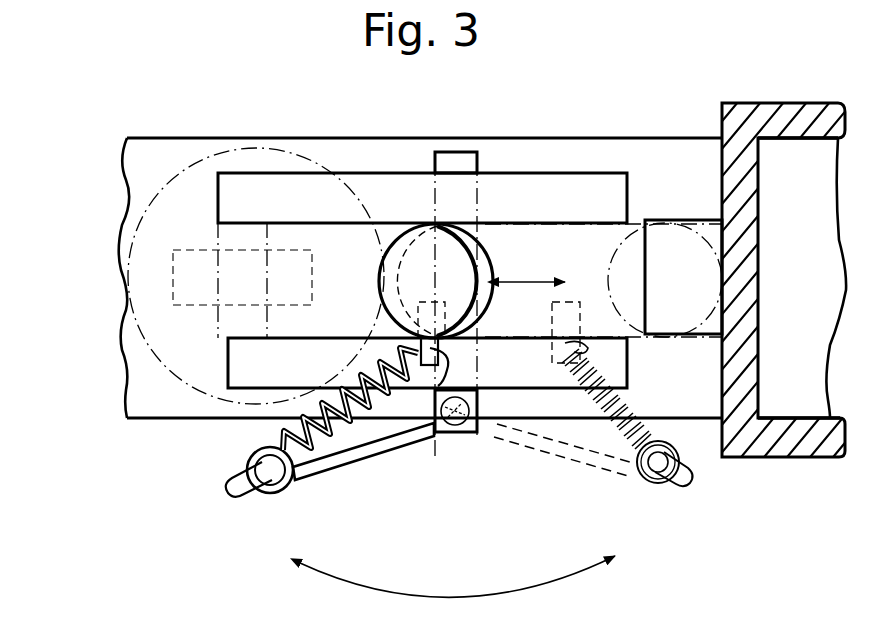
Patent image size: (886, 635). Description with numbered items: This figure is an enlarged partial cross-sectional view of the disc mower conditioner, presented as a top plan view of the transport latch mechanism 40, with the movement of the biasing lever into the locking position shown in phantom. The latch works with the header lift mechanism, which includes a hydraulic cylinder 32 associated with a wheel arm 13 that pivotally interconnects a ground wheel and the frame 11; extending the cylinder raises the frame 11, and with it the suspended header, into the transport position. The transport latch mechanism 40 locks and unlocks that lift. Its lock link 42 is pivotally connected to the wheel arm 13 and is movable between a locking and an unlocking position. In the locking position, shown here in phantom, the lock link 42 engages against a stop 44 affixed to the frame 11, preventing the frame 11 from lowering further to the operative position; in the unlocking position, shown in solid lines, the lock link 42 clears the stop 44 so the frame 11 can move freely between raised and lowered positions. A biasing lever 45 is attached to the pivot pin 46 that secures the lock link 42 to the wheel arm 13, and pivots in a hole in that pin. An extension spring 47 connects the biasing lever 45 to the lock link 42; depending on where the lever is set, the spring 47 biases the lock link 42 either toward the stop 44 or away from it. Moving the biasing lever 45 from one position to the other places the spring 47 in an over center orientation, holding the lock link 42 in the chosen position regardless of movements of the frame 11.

The frame 11 is at (800, 103).
The wheel arm 13 is at (140, 390).
The hydraulic cylinder 32 is at (143, 173).
The transport latch mechanism 40 is at (340, 95).
The lock link 42 is at (400, 233).
The stop 44 is at (683, 219).
The biasing lever 45 is at (355, 457).
The pivot pin 46 is at (460, 437).
The extension spring 47 is at (282, 442).